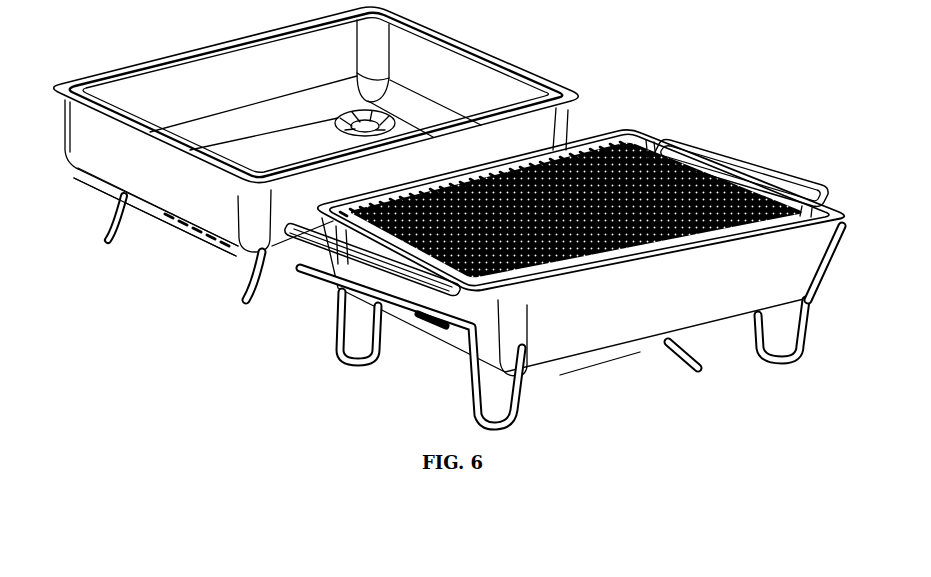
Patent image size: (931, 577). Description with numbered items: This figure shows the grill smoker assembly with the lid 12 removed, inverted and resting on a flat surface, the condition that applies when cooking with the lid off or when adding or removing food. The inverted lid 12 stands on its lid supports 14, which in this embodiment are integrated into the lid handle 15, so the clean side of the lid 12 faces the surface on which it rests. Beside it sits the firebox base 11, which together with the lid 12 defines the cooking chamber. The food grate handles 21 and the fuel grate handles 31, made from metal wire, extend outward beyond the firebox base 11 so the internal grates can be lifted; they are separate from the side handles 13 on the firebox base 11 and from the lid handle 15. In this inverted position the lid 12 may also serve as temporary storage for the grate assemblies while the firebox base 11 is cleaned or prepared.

The firebox base 11 is at (560, 374).
The lid 12 is at (100, 184).
The side handle 13 is at (310, 274).
The lid support 14 is at (108, 244).
The lid handle 15 is at (178, 236).
The food grate handles 21 is at (737, 150).
The fuel grate handles 31 is at (377, 268).